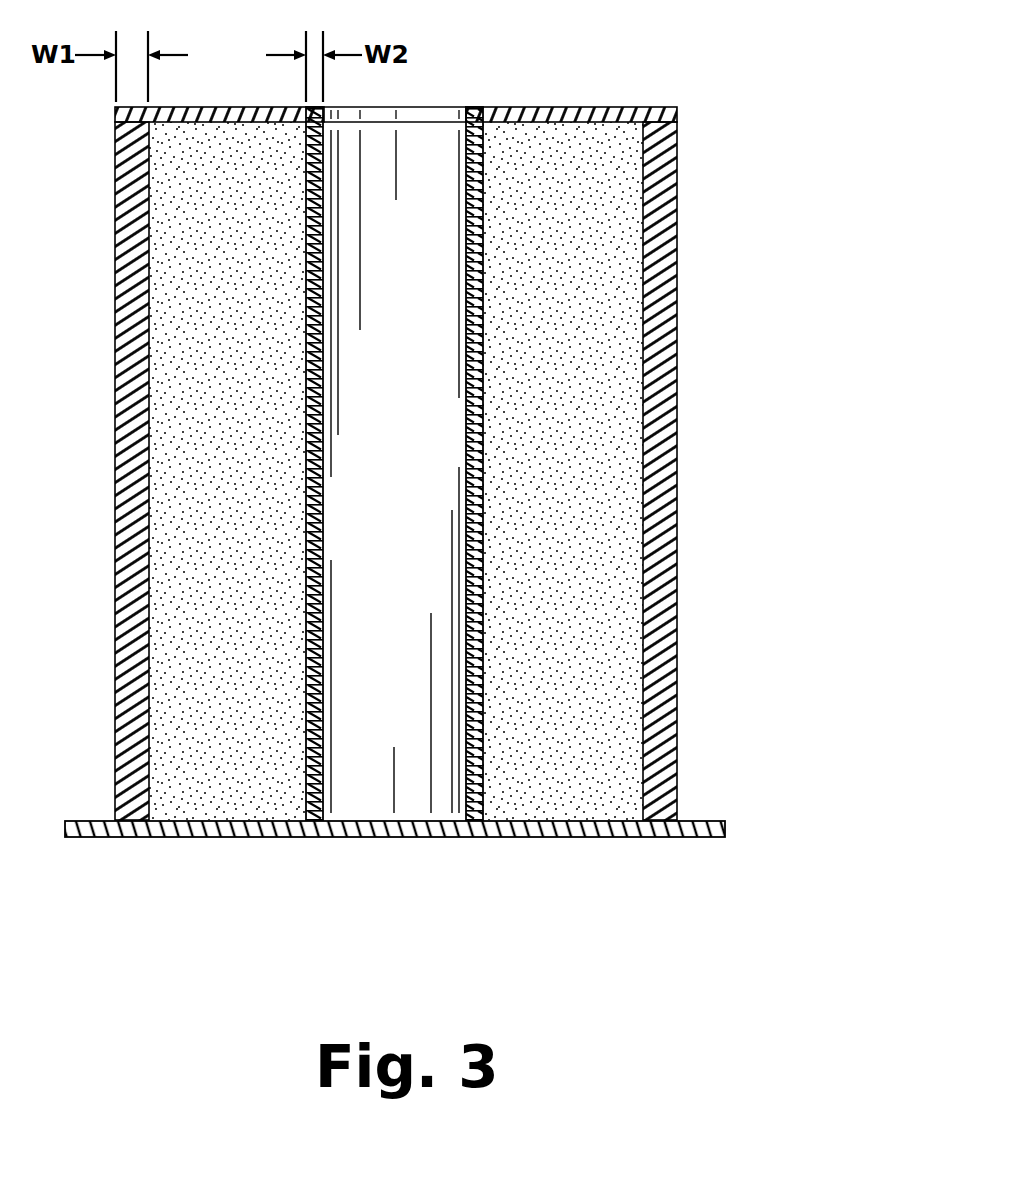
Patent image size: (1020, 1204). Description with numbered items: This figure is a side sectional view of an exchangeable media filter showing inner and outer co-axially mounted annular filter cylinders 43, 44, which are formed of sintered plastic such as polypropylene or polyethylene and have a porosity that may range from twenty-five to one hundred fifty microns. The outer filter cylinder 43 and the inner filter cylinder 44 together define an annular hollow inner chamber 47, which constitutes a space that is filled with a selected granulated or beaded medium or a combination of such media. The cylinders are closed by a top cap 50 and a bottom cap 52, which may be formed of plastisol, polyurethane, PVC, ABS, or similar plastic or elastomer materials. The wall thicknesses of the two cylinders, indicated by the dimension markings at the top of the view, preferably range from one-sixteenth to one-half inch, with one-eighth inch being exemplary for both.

The outer annular filter cylinder 43 is at (678, 258).
The inner annular filter cylinder 44 is at (456, 140).
The annular hollow inner chamber 47 is at (235, 511).
The top cap 50 is at (613, 107).
The bottom cap 52 is at (710, 838).